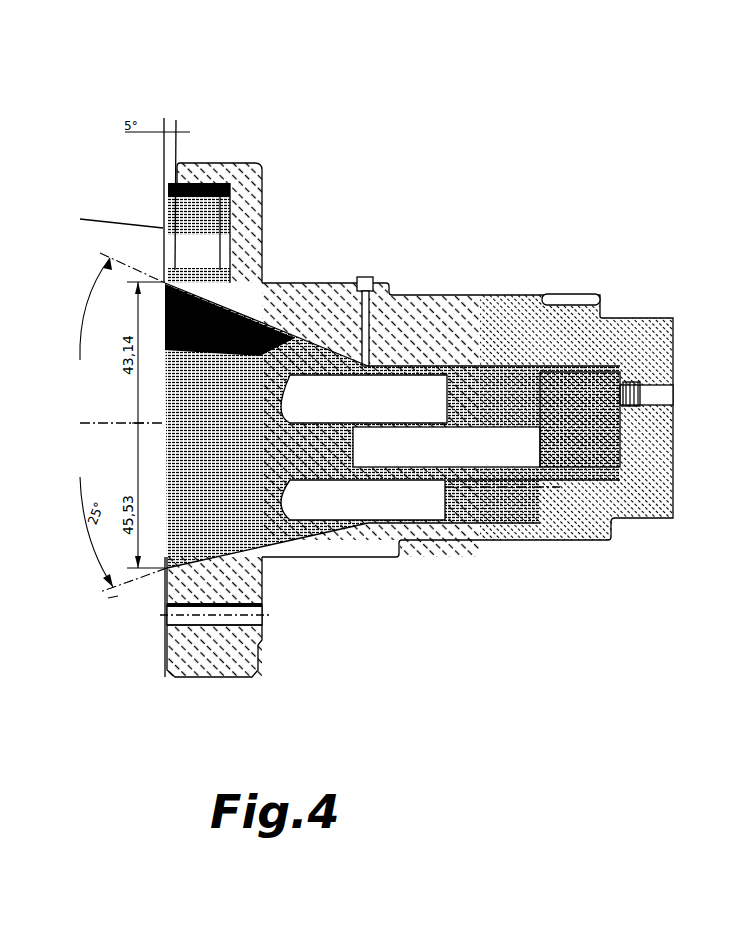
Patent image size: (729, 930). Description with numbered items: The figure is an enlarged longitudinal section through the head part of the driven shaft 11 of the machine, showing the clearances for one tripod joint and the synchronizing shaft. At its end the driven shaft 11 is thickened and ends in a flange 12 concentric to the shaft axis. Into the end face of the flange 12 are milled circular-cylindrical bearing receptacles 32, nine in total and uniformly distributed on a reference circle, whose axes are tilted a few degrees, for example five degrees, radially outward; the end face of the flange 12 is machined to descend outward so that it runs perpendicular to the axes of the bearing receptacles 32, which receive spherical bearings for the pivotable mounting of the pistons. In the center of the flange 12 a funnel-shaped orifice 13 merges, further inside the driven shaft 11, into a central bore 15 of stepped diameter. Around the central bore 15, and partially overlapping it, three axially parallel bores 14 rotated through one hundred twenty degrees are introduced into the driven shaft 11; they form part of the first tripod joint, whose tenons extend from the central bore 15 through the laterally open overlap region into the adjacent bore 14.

The driven shaft 11 is at (490, 318).
The flange 12 is at (237, 173).
The funnel-shaped orifice 13 is at (250, 426).
The axially parallel bore 14 is at (399, 517).
The central bore 15 is at (530, 462).
The bearing receptacle 32 is at (170, 178).